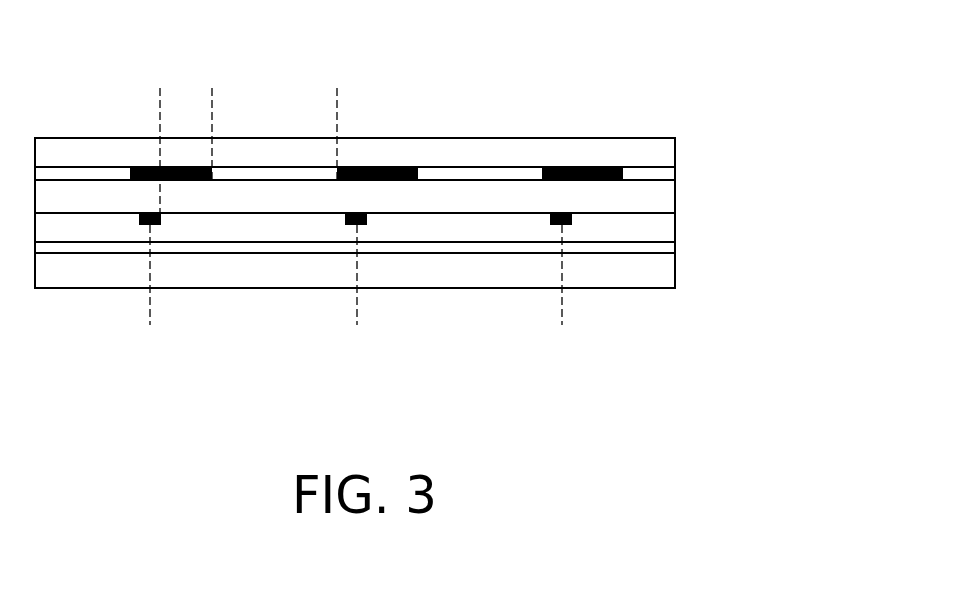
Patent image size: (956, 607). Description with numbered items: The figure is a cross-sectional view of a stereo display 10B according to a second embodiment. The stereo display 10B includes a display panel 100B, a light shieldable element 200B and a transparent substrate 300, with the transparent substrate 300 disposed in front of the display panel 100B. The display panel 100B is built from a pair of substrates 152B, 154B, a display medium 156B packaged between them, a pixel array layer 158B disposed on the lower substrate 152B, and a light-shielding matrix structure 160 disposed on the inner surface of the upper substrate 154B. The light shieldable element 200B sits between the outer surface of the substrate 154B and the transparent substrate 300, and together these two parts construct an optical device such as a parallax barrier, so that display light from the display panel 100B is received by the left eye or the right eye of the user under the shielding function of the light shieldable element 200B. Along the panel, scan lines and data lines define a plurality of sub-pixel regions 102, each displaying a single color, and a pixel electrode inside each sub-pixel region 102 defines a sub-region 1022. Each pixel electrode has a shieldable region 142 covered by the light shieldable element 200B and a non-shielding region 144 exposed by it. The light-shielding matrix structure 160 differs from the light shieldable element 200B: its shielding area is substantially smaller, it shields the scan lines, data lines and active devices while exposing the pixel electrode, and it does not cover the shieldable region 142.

The stereo display 10B is at (700, 395).
The display panel 100B is at (778, 152).
The sub-pixel region 102 is at (357, 305).
The sub-region 1022 is at (287, 55).
The shieldable region 142 is at (212, 105).
The non-shielding region 144 is at (337, 105).
The substrate 152B is at (658, 272).
The substrate 154B is at (662, 200).
The display medium 156B is at (660, 230).
The pixel array layer 158B is at (660, 249).
The light-shielding matrix structure 160 is at (567, 225).
The light shieldable element 200B is at (570, 170).
The transparent substrate 300 is at (630, 157).